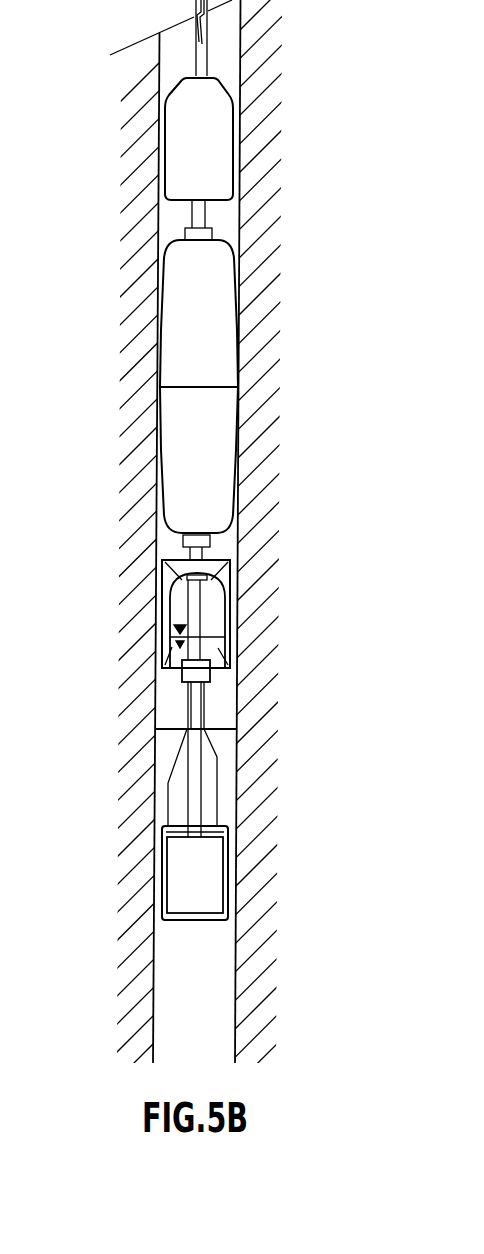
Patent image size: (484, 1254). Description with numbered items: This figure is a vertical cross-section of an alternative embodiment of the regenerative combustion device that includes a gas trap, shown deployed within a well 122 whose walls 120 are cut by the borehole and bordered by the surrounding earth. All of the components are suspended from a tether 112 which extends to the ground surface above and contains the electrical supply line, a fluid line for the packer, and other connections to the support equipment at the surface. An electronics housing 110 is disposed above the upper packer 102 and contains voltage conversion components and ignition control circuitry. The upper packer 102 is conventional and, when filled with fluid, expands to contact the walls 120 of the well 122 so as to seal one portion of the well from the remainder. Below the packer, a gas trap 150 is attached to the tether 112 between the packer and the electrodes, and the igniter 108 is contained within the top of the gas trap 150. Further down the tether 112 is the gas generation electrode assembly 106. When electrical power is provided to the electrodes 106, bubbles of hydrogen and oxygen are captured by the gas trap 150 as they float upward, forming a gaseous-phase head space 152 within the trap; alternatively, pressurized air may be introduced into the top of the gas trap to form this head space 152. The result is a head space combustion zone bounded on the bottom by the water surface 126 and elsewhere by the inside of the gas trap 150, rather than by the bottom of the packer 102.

The upper packer 102 is at (173, 347).
The gas generation electrode assembly 106 is at (182, 883).
The igniter 108 is at (180, 564).
The electronics housing 110 is at (203, 153).
The tether 112 is at (203, 53).
The walls 120 is at (152, 1028).
The well 122 is at (210, 955).
The artificial water level 126 is at (226, 613).
The gas trap 150 is at (238, 528).
The head space 152 is at (208, 592).